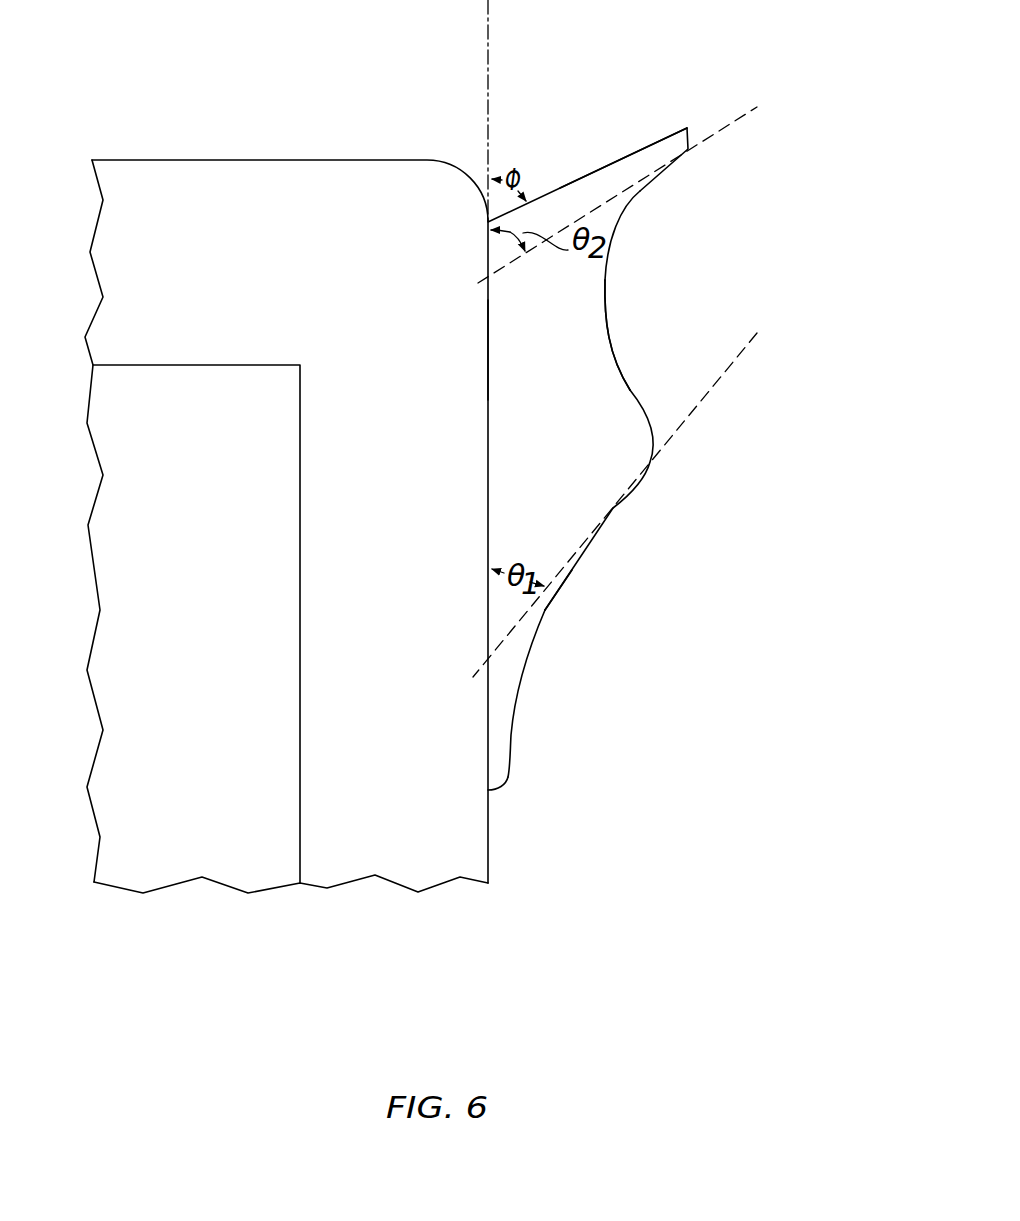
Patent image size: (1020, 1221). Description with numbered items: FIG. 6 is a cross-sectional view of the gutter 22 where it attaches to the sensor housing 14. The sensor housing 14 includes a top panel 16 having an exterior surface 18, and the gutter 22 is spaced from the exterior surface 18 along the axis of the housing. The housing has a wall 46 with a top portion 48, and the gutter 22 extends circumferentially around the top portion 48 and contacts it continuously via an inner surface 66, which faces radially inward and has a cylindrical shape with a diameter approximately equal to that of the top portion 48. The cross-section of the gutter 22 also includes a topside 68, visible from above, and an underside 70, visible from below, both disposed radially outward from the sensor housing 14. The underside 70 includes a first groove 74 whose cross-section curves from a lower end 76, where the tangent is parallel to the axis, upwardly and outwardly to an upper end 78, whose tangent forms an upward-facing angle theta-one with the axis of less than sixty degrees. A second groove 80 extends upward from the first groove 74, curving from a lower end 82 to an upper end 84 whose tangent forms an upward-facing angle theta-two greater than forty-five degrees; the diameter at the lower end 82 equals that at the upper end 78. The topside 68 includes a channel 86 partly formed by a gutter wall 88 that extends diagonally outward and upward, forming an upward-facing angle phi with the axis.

The sensor housing 14 is at (336, 501).
The top panel 16 is at (300, 153).
The exterior surface 18 is at (172, 160).
The gutter 22 is at (638, 420).
The wall 46 is at (490, 848).
The top portion 48 is at (488, 343).
The inner surface 66 is at (489, 372).
The topside 68 is at (664, 131).
The underside 70 is at (510, 792).
The first groove 74 is at (559, 597).
The lower end 76 is at (521, 688).
The upper end 78 is at (614, 508).
The second groove 80 is at (607, 310).
The lower end 82 is at (648, 413).
The upper end 84 is at (641, 192).
The channel 86 is at (555, 190).
The gutter wall 88 is at (605, 166).